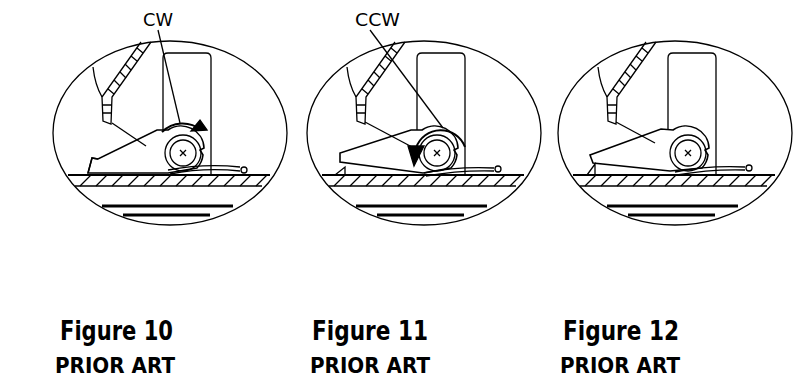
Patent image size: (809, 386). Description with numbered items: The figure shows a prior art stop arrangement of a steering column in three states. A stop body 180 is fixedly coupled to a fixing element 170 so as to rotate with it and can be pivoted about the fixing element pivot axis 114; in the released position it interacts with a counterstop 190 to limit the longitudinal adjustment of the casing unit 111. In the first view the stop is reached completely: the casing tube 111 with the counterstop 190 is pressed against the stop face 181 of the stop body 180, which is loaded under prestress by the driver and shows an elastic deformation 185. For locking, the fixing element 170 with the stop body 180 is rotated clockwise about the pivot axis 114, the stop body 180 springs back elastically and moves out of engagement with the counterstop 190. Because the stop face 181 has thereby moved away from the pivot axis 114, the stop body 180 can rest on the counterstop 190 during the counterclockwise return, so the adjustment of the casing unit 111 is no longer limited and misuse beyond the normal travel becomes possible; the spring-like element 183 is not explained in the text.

In FIG. 10, the casing unit 111 is at (132, 177).
In FIG. 11, the casing unit 111 is at (425, 227).
In FIG. 12, the casing unit 111 is at (676, 227).
In FIG. 10, the fixing element pivot axis 114 is at (183, 168).
In FIG. 11, the fixing element pivot axis 114 is at (433, 207).
In FIG. 12, the fixing element pivot axis 114 is at (684, 207).
In FIG. 10, the fixing element 170 is at (170, 173).
In FIG. 11, the fixing element 170 is at (433, 223).
In FIG. 12, the fixing element 170 is at (684, 223).
In FIG. 10, the stop body 180 is at (133, 157).
In FIG. 11, the stop body 180 is at (377, 202).
In FIG. 12, the stop body 180 is at (628, 202).
In FIG. 10, the stop face 181 is at (91, 163).
In FIG. 11, the stop face 181 is at (330, 92).
In FIG. 12, the stop face 181 is at (577, 92).
In FIG. 10, the spring end 183 is at (227, 173).
In FIG. 11, the spring end 183 is at (467, 222).
In FIG. 12, the spring end 183 is at (718, 222).
In FIG. 10, the elastic deformation 185 is at (96, 160).
In FIG. 11, the elastic deformation 185 is at (380, 83).
In FIG. 12, the elastic deformation 185 is at (631, 83).
In FIG. 10, the counterstop 190 is at (85, 173).
In FIG. 11, the counterstop 190 is at (394, 92).
In FIG. 12, the counterstop 190 is at (645, 92).